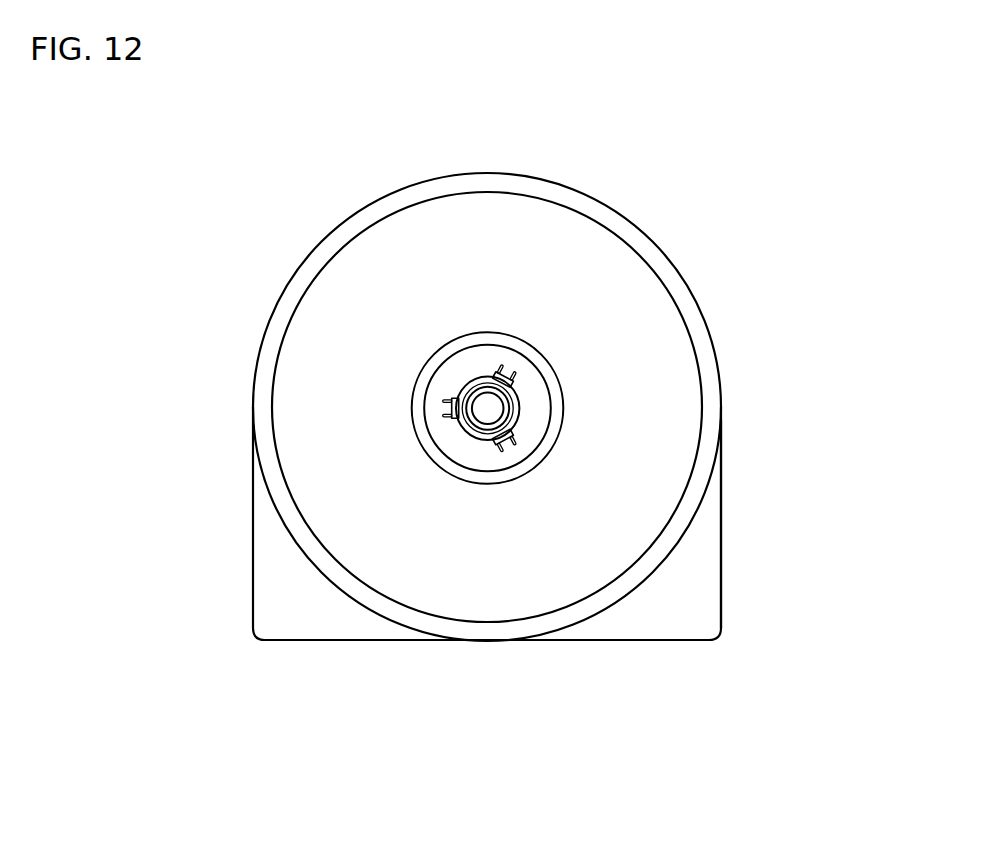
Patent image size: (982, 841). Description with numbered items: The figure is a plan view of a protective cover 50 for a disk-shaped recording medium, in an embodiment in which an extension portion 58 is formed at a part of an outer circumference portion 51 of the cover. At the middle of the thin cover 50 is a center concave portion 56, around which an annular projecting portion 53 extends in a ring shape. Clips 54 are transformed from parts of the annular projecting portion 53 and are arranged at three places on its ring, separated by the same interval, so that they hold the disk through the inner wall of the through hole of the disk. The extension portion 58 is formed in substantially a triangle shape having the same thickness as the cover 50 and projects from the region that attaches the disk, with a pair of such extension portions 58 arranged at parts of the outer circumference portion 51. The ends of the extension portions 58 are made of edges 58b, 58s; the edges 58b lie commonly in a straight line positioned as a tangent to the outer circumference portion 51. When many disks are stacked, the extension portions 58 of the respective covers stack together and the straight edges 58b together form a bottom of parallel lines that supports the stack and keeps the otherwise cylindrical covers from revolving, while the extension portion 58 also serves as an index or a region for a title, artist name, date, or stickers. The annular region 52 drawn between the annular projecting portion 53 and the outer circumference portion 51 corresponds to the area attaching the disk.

The protective cover 50 is at (657, 367).
The outer circumference portion 51 is at (712, 407).
The annular ring portion 52 is at (541, 368).
The annular projecting portion 53 is at (472, 376).
The clips 54 is at (510, 373).
The center concave portion 56 is at (485, 411).
The extension portion 58 is at (687, 600).
The edge 58s is at (721, 545).
The edge 58b is at (641, 640).